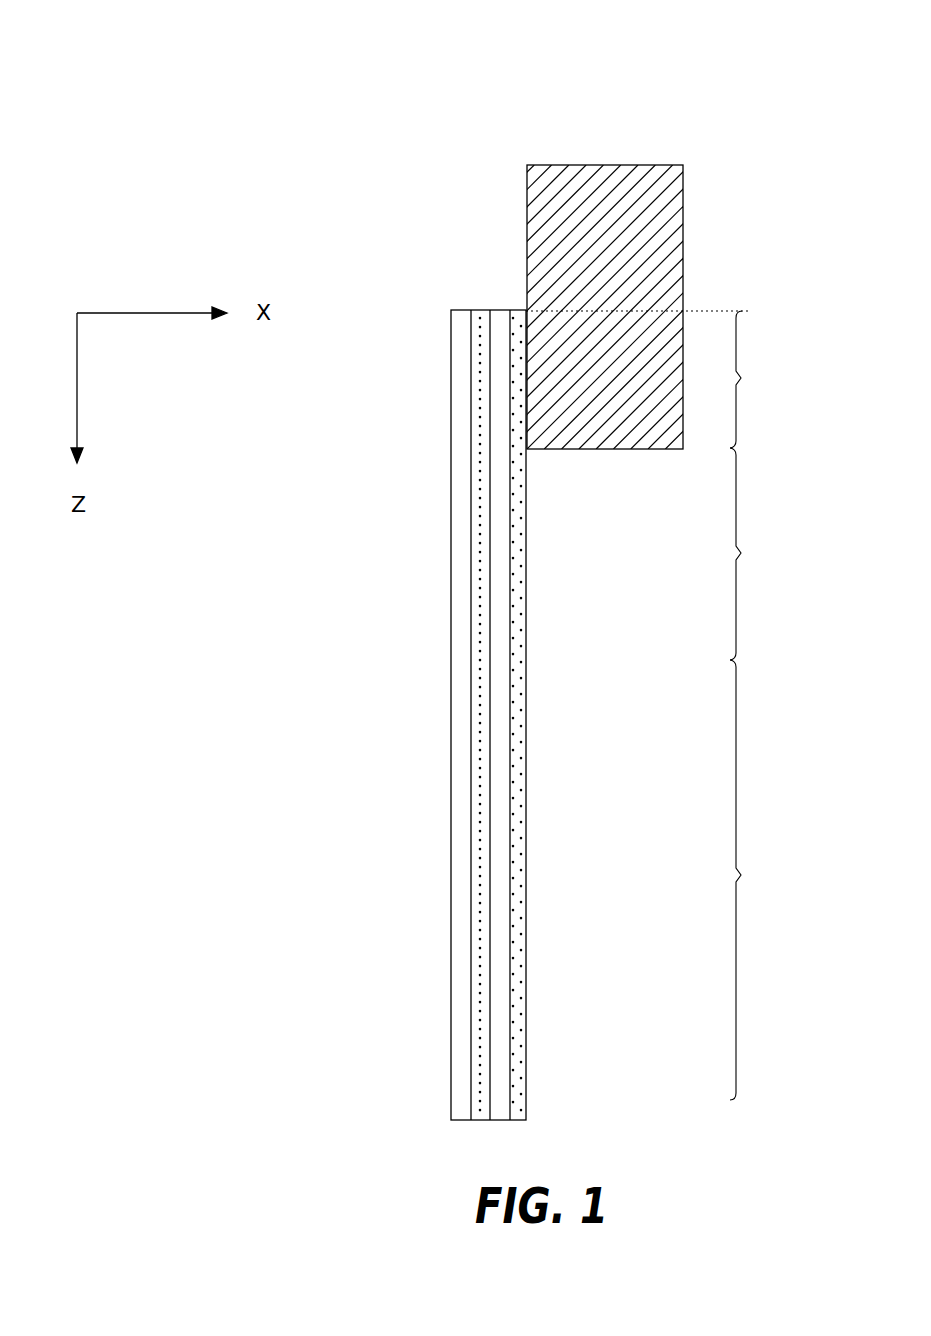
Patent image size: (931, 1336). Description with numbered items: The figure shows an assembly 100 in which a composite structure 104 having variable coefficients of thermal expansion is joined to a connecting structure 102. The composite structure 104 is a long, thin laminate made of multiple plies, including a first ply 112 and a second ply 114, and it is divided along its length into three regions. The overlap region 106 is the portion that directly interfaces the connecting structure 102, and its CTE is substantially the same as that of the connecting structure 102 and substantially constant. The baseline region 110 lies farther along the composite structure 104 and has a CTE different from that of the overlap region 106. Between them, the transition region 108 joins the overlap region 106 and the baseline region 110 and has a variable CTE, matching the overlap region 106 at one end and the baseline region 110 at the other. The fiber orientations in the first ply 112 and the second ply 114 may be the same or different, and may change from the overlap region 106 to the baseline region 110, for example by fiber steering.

The assembly 100 is at (690, 115).
The connecting structure 102 is at (683, 178).
The composite structure 104 is at (427, 275).
The overlap region 106 is at (765, 379).
The transition region 108 is at (766, 554).
The baseline region 110 is at (767, 880).
The first ply 112 is at (497, 310).
The second ply 114 is at (457, 310).